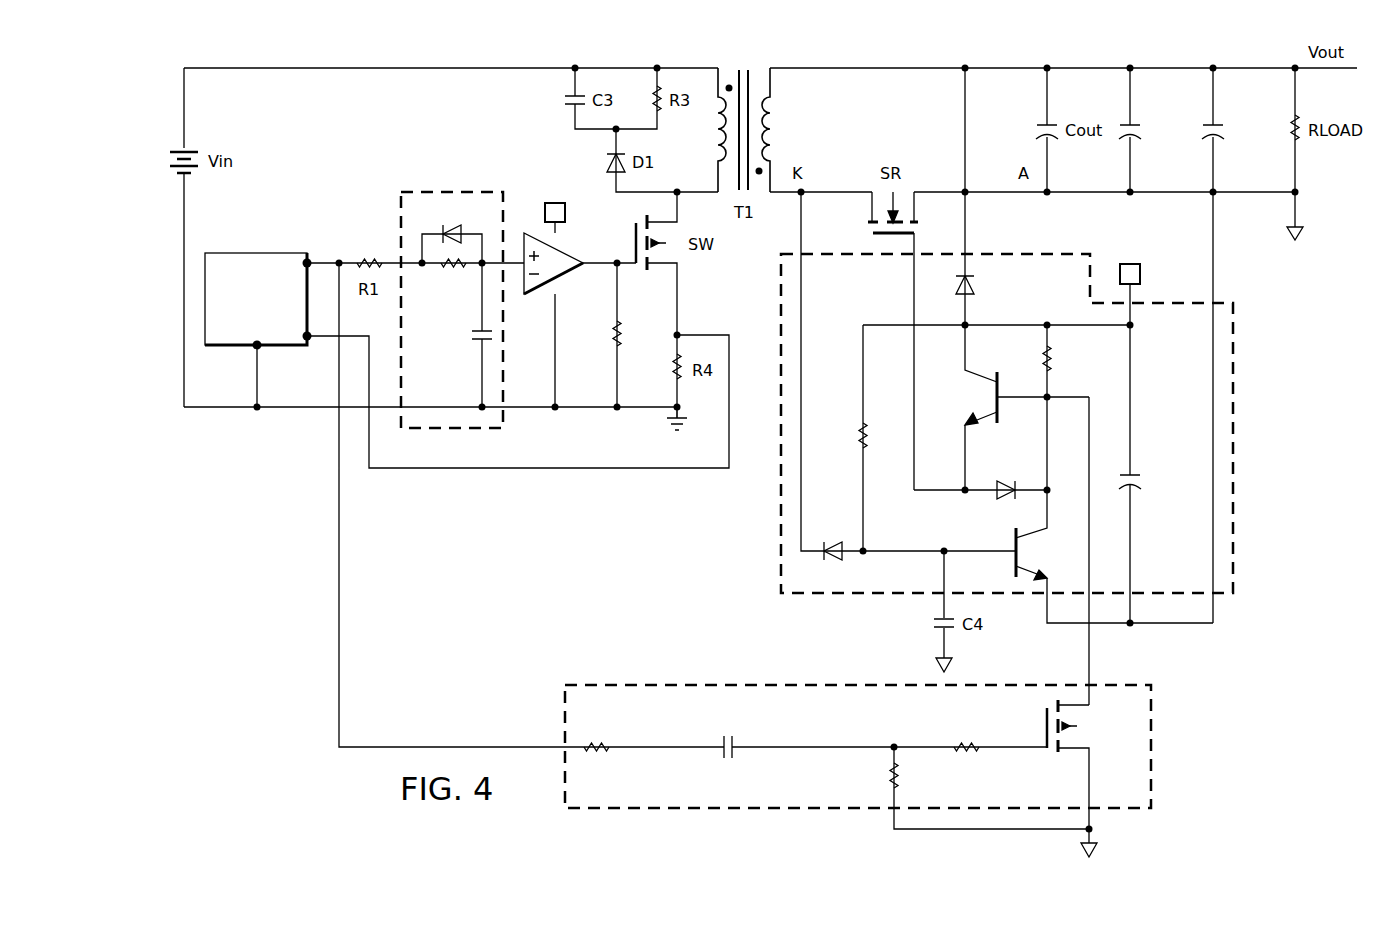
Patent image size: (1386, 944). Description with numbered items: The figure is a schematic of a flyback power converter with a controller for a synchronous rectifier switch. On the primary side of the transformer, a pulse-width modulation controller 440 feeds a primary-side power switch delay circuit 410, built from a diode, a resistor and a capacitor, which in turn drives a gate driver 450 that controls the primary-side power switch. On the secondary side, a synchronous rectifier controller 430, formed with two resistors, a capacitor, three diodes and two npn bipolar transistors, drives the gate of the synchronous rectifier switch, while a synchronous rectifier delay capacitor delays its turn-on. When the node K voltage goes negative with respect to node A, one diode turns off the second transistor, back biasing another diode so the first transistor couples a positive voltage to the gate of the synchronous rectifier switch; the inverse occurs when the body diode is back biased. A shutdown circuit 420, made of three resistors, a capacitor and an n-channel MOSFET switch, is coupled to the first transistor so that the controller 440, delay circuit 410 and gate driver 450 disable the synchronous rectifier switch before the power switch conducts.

The primary-side power switch delay circuit 410 is at (428, 190).
The shutdown circuit 420 is at (1153, 787).
The synchronous rectifier controller 430 is at (1236, 337).
The pulse-width modulation controller 440 is at (245, 253).
The gate driver 450 is at (565, 248).